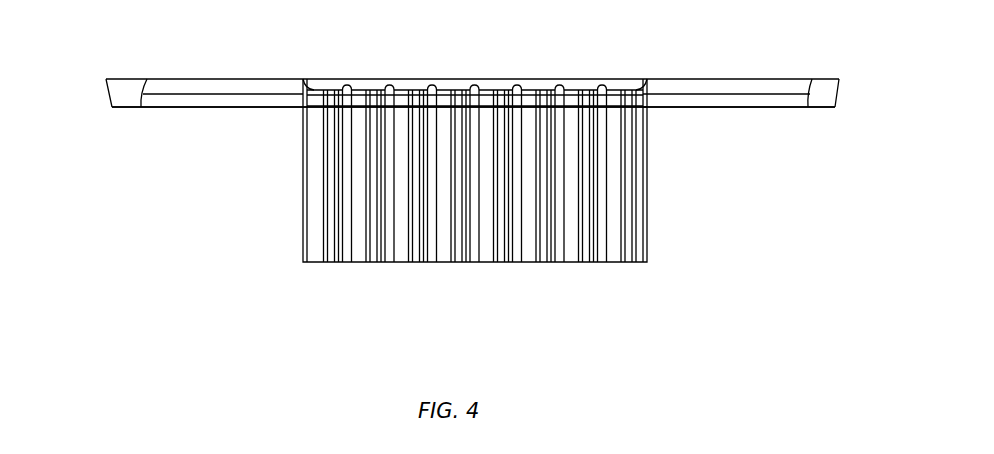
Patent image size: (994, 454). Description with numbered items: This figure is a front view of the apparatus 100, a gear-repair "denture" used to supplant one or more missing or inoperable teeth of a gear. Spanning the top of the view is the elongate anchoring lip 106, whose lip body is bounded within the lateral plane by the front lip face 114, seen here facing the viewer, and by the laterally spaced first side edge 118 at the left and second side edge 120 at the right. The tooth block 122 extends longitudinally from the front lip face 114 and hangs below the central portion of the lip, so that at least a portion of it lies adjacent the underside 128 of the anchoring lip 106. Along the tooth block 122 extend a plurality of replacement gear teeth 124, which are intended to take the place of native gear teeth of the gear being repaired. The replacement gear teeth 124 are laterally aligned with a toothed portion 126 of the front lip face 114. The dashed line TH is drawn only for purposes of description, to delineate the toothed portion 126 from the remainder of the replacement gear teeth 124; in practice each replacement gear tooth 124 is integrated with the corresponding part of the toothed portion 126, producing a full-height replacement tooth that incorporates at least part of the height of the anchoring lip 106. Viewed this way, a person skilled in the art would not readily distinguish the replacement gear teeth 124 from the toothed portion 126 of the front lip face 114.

The apparatus 100 is at (745, 202).
The anchoring lip 106 is at (220, 79).
The front lip face 114 is at (742, 100).
The first side edge 118 is at (122, 94).
The second side edge 120 is at (825, 93).
The tooth block 122 is at (655, 252).
The replacement gear tooth 124 is at (467, 253).
The toothed portion 126 is at (622, 88).
The underside 128 is at (213, 108).
The dashed line TH is at (644, 108).